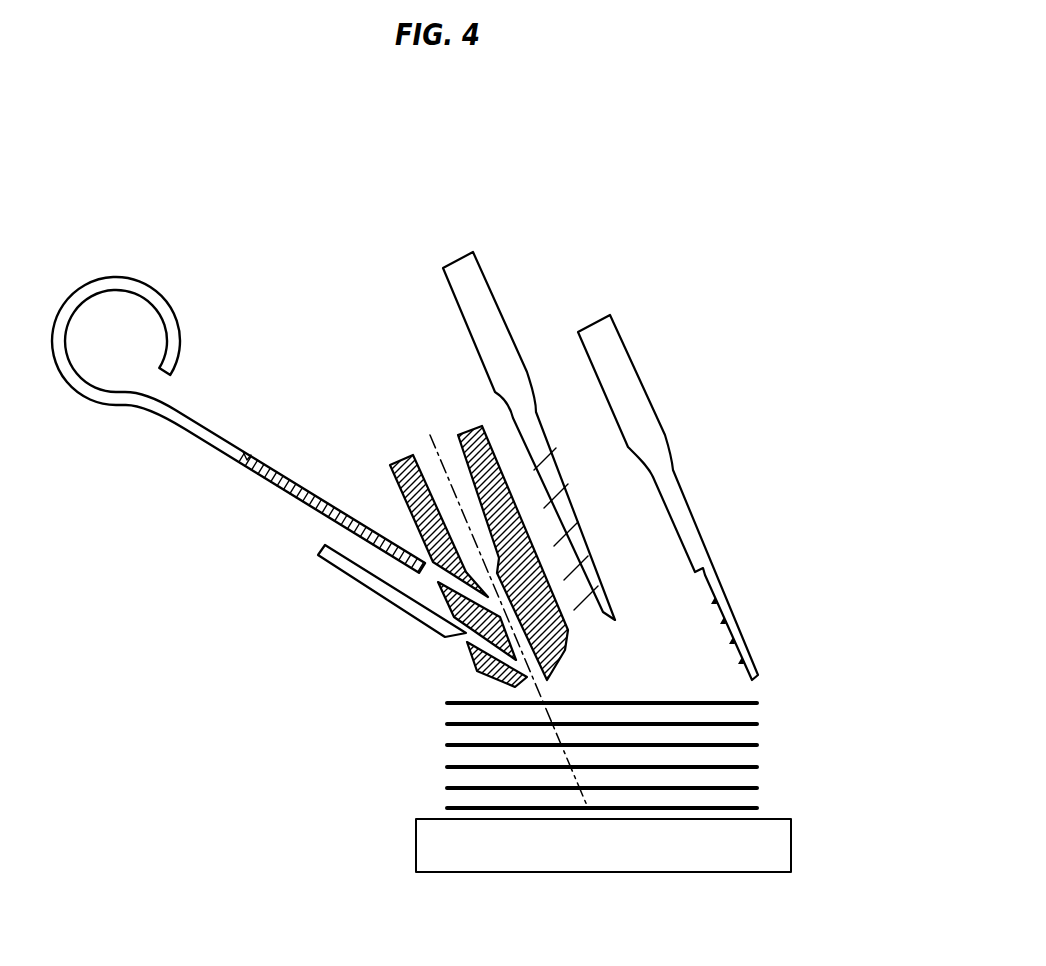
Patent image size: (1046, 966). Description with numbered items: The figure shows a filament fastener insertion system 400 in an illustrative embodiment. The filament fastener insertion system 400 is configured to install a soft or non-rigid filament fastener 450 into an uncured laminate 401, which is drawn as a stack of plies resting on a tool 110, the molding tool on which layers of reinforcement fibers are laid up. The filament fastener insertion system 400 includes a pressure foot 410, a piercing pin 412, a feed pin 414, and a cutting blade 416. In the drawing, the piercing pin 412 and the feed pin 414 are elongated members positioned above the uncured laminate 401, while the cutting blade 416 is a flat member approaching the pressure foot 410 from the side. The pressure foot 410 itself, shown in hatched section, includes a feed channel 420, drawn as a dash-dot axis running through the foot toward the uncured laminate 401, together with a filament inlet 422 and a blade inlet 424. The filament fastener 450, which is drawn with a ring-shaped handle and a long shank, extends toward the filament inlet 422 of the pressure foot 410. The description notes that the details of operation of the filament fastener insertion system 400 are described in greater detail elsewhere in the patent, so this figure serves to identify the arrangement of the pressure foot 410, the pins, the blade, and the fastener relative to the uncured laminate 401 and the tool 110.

The filament fastener insertion system 400 is at (323, 170).
The uncured laminate 401 is at (773, 737).
The pressure foot 410 is at (390, 446).
The piercing pin 412 is at (483, 308).
The feed pin 414 is at (620, 368).
The cutting blade 416 is at (328, 565).
The feed channel 420 is at (441, 462).
The filament inlet 422 is at (425, 535).
The blade inlet 424 is at (488, 652).
The filament fastener 450 is at (178, 412).
The tool 110 is at (420, 848).